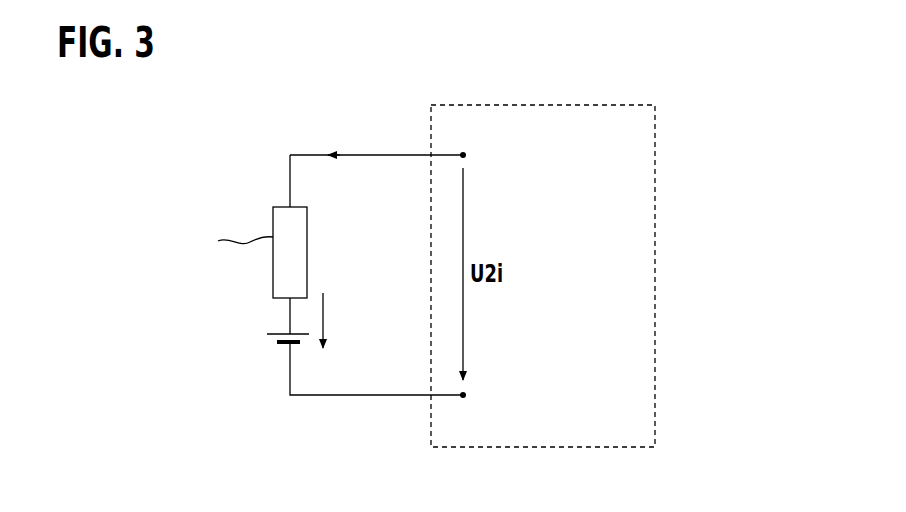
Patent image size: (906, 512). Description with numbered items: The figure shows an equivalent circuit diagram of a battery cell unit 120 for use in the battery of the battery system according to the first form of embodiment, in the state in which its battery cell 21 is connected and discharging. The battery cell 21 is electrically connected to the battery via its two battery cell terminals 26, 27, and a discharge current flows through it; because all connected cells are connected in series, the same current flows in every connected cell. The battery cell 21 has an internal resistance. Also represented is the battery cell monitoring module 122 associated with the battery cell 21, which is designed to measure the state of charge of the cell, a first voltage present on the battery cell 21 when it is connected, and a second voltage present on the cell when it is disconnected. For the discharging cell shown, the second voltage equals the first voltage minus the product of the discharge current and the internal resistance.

The battery cell unit 120 is at (262, 412).
The battery cell 21 is at (281, 333).
The battery cell terminal 26 is at (468, 155).
The battery cell terminal 27 is at (468, 396).
The battery cell monitoring module 122 is at (656, 222).